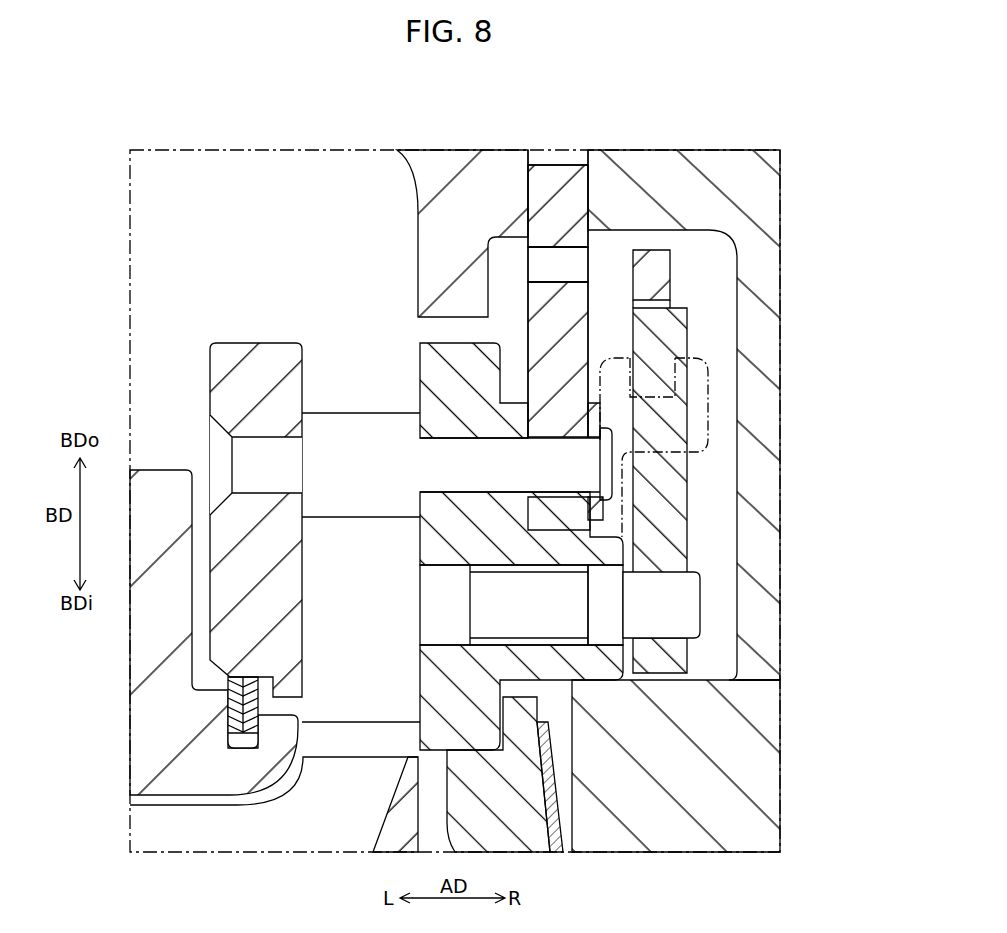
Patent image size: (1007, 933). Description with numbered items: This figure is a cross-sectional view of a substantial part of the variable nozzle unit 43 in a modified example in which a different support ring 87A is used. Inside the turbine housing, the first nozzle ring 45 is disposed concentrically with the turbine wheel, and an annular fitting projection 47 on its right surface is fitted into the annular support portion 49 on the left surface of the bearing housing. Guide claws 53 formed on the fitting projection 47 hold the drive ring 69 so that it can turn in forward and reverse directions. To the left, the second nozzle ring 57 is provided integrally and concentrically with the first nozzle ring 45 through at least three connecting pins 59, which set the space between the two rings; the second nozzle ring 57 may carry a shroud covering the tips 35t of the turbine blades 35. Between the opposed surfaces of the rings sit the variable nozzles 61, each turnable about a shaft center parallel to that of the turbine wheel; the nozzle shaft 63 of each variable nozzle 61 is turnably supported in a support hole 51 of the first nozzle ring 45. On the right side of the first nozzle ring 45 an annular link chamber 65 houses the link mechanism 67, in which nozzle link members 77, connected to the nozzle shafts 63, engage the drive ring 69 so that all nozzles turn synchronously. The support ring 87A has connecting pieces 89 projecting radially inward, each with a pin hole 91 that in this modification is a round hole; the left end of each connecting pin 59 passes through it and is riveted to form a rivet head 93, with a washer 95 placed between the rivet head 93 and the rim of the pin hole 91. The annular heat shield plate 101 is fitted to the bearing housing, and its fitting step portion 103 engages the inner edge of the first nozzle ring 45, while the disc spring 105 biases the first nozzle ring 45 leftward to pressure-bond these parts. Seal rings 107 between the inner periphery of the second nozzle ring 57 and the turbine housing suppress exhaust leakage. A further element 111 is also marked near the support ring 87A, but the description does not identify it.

The turbine blades 35 is at (290, 840).
The tips of the turbine blades 35t is at (176, 796).
The variable nozzle unit 43 is at (312, 249).
The first nozzle ring 45 is at (422, 358).
The fitting projection 47 is at (607, 670).
The support portion 49 is at (700, 666).
The support holes 51 is at (470, 622).
The guide claws 53 is at (712, 401).
The second nozzle ring 57 is at (220, 371).
The connecting pins 59 is at (347, 420).
The variable nozzles 61 is at (375, 677).
The nozzle shaft 63 is at (680, 601).
The link chamber 65 is at (707, 328).
The link mechanism 67 is at (700, 488).
The drive ring 69 is at (664, 263).
The nozzle link members 77 is at (684, 536).
The support ring 87A is at (557, 172).
The connecting pieces 89 is at (602, 365).
The pin hole 91 is at (566, 486).
The rivet head 93 is at (614, 433).
The washer 95 is at (604, 500).
The heat shield plate 101 is at (453, 804).
The fitting step portion 103 is at (538, 760).
The disc spring 105 is at (553, 813).
The seal rings 107 is at (230, 703).
The recess 111 is at (557, 277).